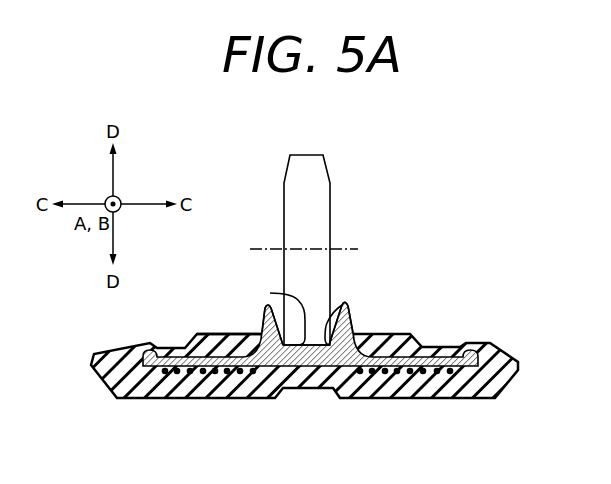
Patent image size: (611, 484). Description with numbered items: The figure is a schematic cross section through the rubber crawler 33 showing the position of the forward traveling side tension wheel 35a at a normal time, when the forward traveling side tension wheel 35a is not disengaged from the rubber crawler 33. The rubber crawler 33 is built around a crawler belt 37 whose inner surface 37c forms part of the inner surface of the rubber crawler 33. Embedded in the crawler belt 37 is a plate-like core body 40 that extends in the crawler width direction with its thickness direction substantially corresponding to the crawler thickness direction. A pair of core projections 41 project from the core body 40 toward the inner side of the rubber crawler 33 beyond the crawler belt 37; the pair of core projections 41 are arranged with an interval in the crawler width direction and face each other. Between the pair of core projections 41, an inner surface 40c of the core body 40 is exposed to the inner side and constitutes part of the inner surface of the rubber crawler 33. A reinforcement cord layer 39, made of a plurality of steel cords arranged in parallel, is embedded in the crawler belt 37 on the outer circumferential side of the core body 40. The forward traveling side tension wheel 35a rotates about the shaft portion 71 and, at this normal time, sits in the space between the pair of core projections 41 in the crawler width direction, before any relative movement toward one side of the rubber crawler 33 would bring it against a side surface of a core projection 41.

The rubber crawler 33 is at (301, 346).
The forward traveling side tension wheel 35a is at (347, 189).
The crawler belt 37 is at (444, 388).
The inner surface of crawler belt 37c is at (228, 334).
The reinforcement cord layer 39 is at (199, 373).
The core body 40 is at (392, 357).
The inner surface of core body 40c is at (270, 293).
The core projections 41 is at (267, 307).
The shaft portion 71 is at (342, 250).